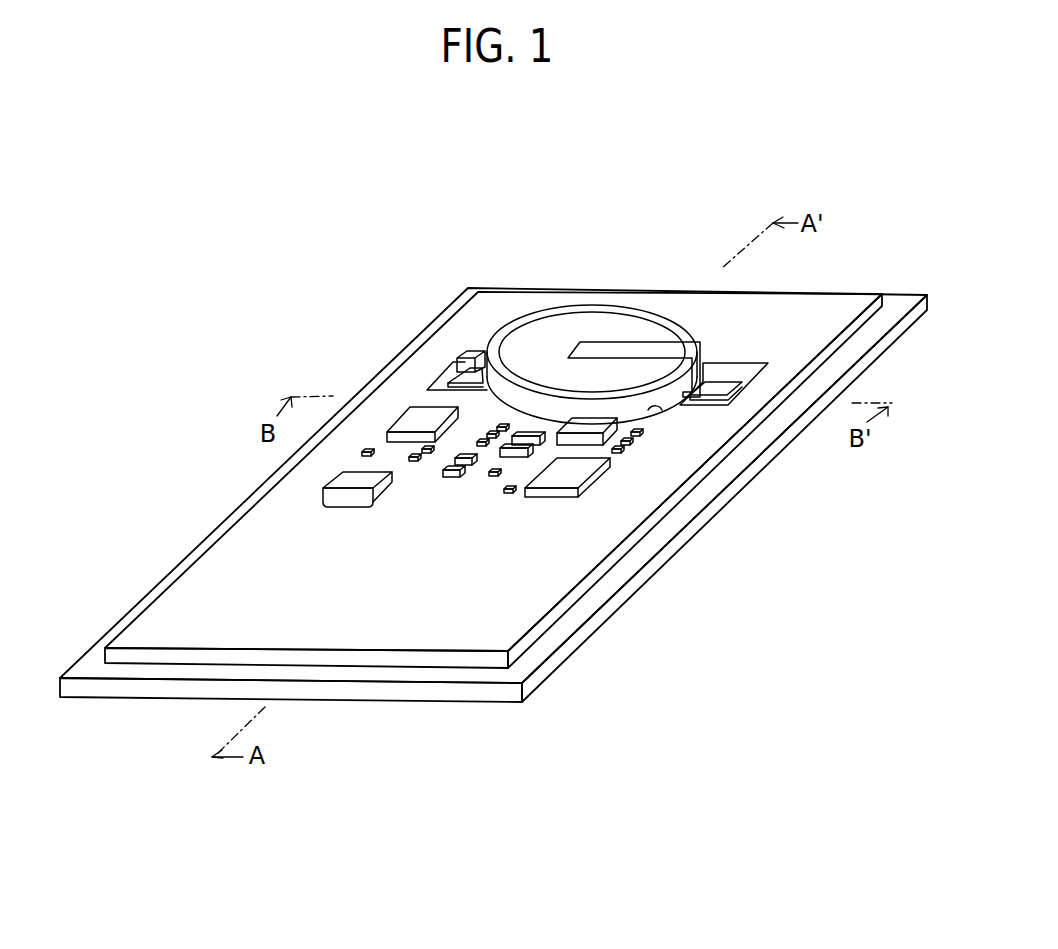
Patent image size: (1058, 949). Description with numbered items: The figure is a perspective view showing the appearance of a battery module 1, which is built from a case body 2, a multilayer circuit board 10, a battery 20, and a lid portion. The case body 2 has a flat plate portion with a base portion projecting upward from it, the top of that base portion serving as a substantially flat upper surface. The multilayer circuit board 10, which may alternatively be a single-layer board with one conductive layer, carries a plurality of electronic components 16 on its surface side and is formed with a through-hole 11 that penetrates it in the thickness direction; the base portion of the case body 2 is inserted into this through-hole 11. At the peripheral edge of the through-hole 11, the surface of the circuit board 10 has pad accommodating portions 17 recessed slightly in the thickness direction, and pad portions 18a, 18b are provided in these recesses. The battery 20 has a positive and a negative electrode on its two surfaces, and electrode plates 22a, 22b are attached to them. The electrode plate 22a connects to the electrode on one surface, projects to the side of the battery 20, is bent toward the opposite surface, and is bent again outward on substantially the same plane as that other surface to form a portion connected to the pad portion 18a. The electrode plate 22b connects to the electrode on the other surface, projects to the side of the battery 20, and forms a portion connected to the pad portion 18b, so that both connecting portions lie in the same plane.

The battery module 1 is at (475, 257).
The case body 2 is at (902, 302).
The multilayer circuit board 10 is at (822, 302).
The through-hole 11 is at (648, 410).
The electronic components 16 is at (455, 480).
The pad accommodating portions 17 is at (477, 347).
The pad portion 18a is at (750, 383).
The pad portion 18b is at (453, 380).
The battery 20 is at (532, 298).
The electrode plate 22a is at (610, 340).
The electrode plate 22b is at (460, 358).